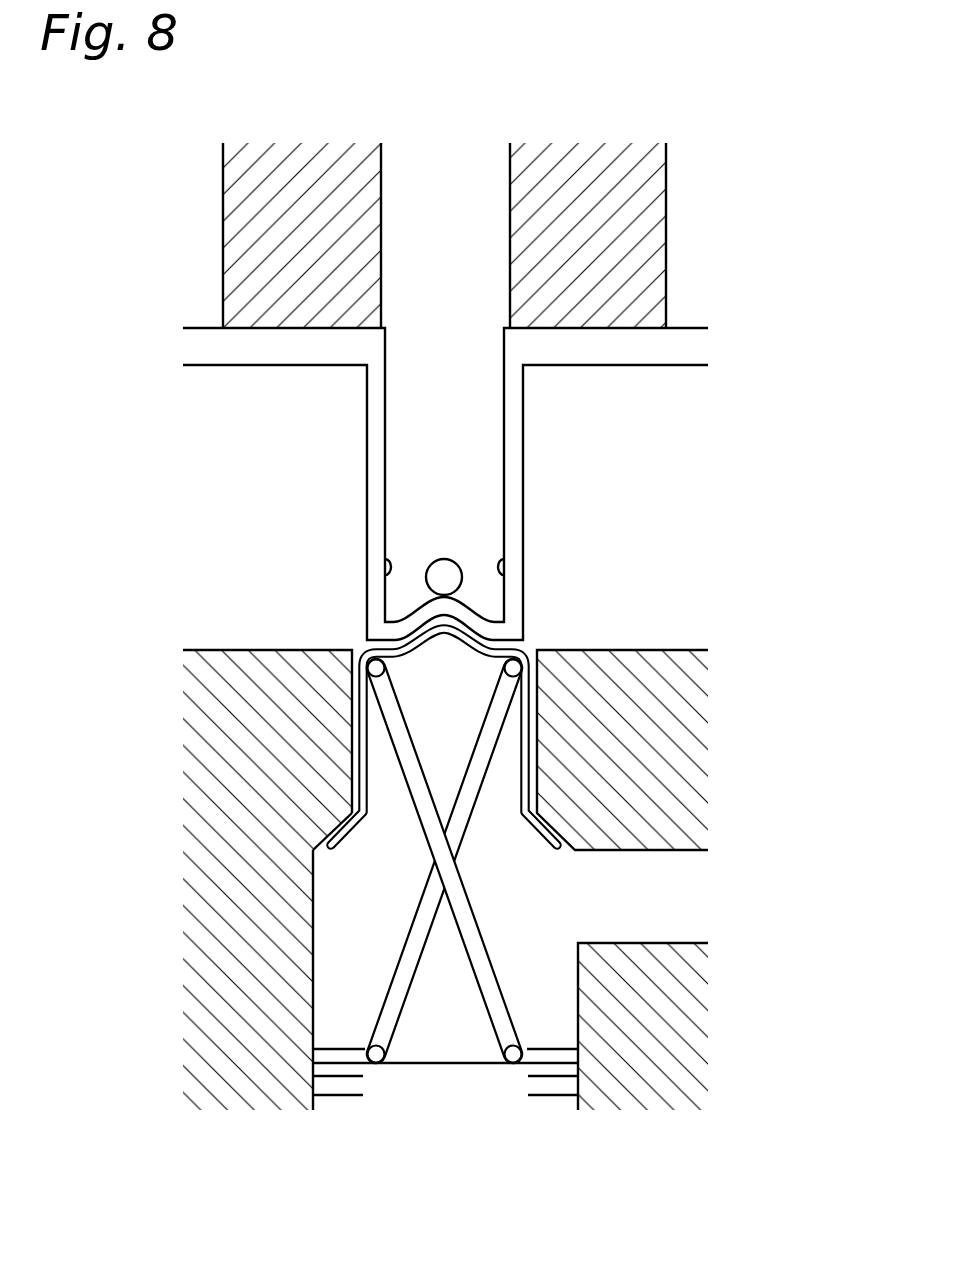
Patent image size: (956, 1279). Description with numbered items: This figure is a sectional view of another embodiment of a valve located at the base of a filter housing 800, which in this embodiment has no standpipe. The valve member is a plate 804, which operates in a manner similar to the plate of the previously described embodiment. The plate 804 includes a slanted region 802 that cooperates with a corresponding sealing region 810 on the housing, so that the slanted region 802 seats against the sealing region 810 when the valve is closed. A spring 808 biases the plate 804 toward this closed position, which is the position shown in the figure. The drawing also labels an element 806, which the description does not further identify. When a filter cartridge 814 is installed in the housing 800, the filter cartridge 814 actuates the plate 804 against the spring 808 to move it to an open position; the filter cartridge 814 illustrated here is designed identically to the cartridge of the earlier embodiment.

The filter housing 800 is at (728, 1023).
The slanted region 802 is at (347, 837).
The plate 804 is at (540, 668).
The ball detent 806 is at (447, 572).
The spring 808 is at (487, 982).
The sealing region 810 is at (330, 828).
The filter cartridge 814 is at (740, 373).